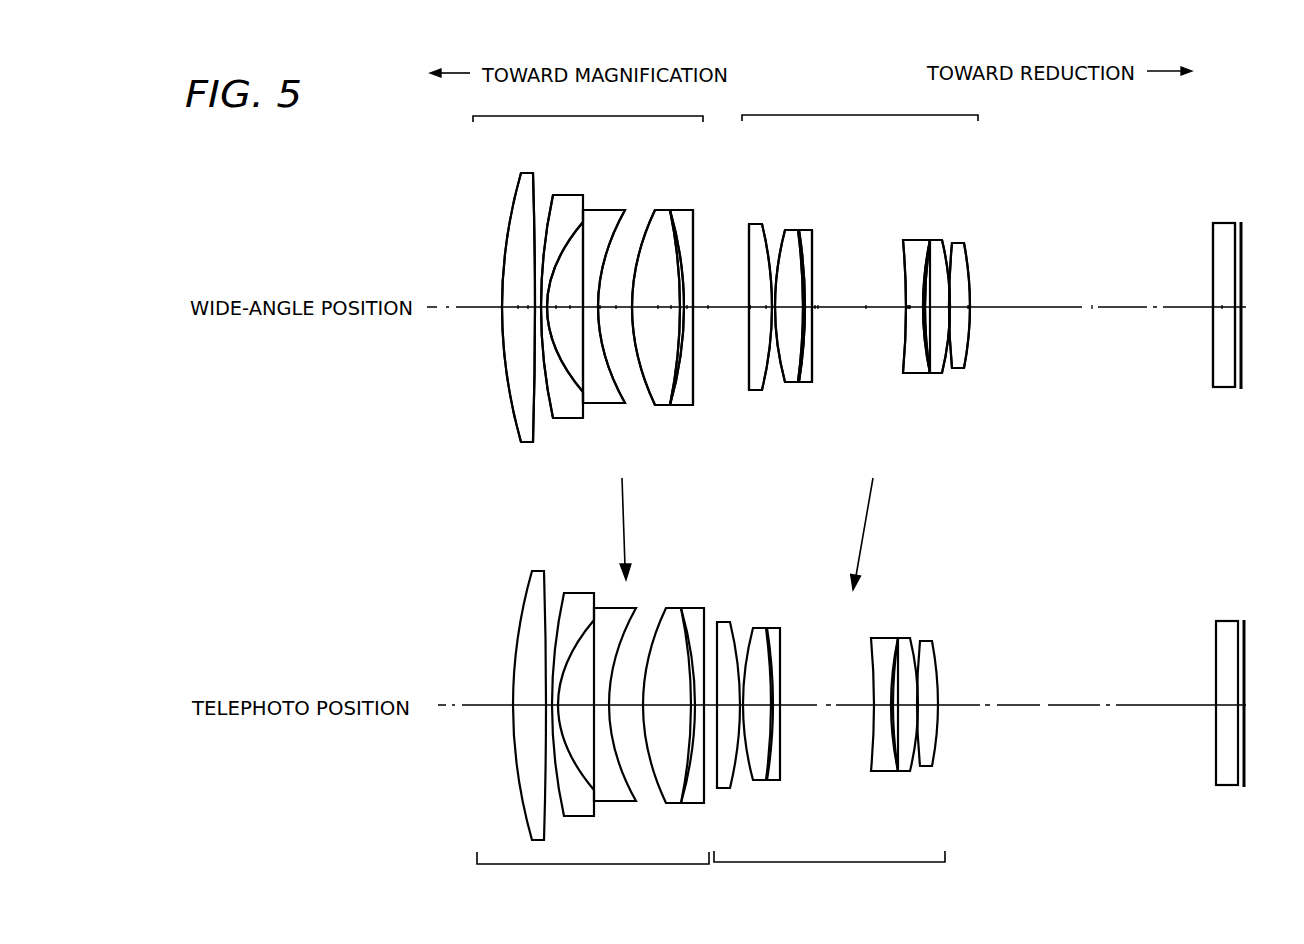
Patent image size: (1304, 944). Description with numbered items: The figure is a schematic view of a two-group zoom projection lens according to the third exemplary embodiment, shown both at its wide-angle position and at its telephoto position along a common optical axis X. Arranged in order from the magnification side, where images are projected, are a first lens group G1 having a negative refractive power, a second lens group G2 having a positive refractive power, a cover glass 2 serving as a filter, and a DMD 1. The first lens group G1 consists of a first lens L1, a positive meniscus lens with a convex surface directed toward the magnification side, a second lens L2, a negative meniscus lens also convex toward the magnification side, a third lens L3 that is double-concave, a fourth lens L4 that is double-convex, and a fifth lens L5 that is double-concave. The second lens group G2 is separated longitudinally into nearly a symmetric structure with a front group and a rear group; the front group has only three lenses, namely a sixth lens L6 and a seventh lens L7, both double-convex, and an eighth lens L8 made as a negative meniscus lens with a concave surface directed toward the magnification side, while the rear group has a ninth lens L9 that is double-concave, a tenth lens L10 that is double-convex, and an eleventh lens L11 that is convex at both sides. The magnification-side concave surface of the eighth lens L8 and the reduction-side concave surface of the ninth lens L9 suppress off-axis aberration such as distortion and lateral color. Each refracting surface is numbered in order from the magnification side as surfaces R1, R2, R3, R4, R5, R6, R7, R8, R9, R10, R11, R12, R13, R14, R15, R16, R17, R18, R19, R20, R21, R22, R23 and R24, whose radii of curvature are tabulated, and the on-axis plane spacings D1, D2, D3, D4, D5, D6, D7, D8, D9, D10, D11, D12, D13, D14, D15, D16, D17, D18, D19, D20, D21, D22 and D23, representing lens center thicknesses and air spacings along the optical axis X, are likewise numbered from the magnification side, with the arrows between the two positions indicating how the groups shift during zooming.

The optical axis X is at (455, 322).
The first lens group G1 is at (591, 491).
The second lens group G2 is at (846, 492).
The first lens L1 is at (530, 443).
The second lens L2 is at (570, 420).
The third lens L3 is at (605, 405).
The fourth lens L4 is at (657, 406).
The fifth lens L5 is at (683, 406).
The sixth lens L6 is at (756, 391).
The seventh lens L7 is at (782, 383).
The eighth lens L8 is at (810, 363).
The ninth lens L9 is at (903, 363).
The tenth lens L10 is at (931, 374).
The eleventh lens L11 is at (967, 348).
The lens surface R1 is at (510, 220).
The lens surface R2 is at (536, 192).
The lens surface R3 is at (543, 210).
The lens surface R4 is at (578, 232).
The lens surface R5 is at (585, 230).
The lens surface R6 is at (619, 232).
The lens surface R7 is at (637, 262).
The lens surface R8 is at (672, 238).
The lens surface R9 is at (680, 230).
The lens surface R10 is at (697, 258).
The lens surface R11 is at (749, 247).
The lens surface R12 is at (768, 236).
The lens surface R13 is at (779, 230).
The lens surface R14 is at (800, 230).
The lens surface R15 is at (797, 362).
The lens surface R16 is at (813, 262).
The lens surface R17 is at (903, 250).
The lens surface R18 is at (930, 243).
The lens surface R19 is at (927, 360).
The lens surface R20 is at (946, 256).
The lens surface R21 is at (951, 355).
The lens surface R22 is at (968, 265).
The lens surface R23 is at (1212, 232).
The lens surface R24 is at (1243, 237).
The on-axis plane spacing D1 is at (521, 314).
The on-axis plane spacing D2 is at (526, 303).
The on-axis plane spacing D3 is at (558, 303).
The on-axis plane spacing D4 is at (569, 316).
The on-axis plane spacing D5 is at (601, 297).
The on-axis plane spacing D6 is at (616, 318).
The on-axis plane spacing D7 is at (658, 316).
The on-axis plane spacing D8 is at (670, 301).
The on-axis plane spacing D9 is at (687, 297).
The on-axis plane spacing D10 is at (708, 320).
The on-axis plane spacing D11 is at (749, 300).
The on-axis plane spacing D12 is at (749, 312).
The on-axis plane spacing D13 is at (765, 296).
The on-axis plane spacing D14 is at (818, 313).
The on-axis plane spacing D15 is at (815, 301).
The on-axis plane spacing D16 is at (866, 313).
The on-axis plane spacing D17 is at (908, 300).
The on-axis plane spacing D18 is at (910, 315).
The on-axis plane spacing D19 is at (908, 300).
The on-axis plane spacing D20 is at (968, 302).
The on-axis plane spacing D21 is at (969, 317).
The on-axis plane spacing D22 is at (1092, 316).
The on-axis plane spacing D23 is at (1222, 302).
The DMD 1 is at (1243, 364).
The cover glass 2 is at (1223, 388).